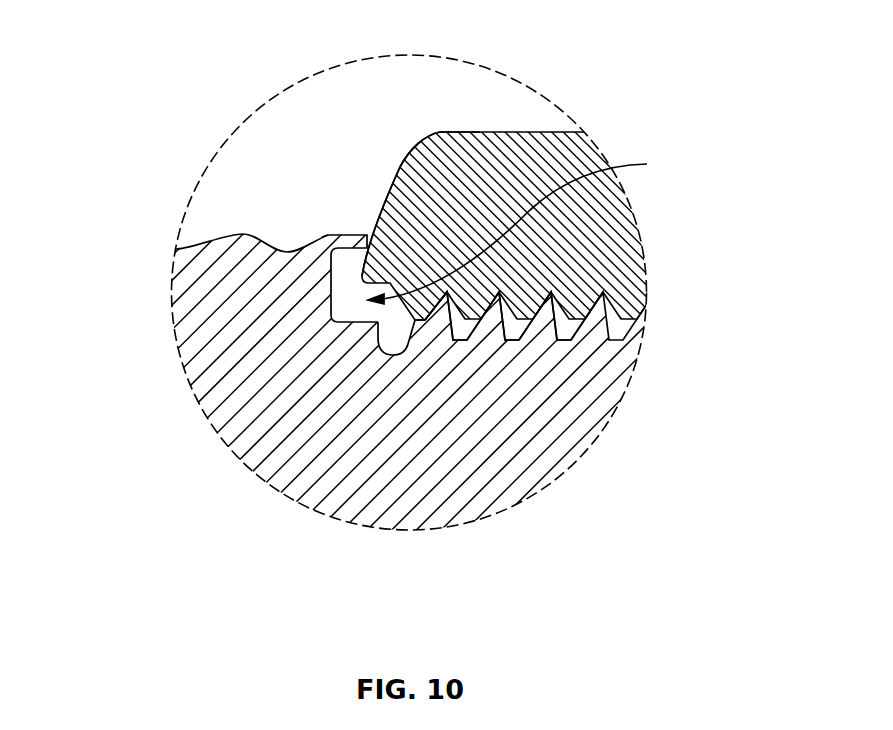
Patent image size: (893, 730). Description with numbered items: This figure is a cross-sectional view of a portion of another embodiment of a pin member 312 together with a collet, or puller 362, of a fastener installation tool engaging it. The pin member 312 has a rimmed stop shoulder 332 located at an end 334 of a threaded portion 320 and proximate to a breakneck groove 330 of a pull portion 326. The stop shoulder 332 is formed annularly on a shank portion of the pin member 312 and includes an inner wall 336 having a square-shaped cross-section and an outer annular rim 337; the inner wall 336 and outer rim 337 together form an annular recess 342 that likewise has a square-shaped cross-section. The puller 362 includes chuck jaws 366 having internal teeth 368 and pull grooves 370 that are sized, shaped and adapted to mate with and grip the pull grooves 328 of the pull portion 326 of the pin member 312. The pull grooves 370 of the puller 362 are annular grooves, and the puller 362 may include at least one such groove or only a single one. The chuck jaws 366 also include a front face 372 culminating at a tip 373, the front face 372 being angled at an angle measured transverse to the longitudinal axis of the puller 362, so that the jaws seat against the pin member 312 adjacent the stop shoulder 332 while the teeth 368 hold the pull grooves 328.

The pin member 312 is at (250, 425).
The threaded portion 320 is at (197, 268).
The pull portion 326 is at (543, 427).
The pull grooves 328 is at (618, 332).
The breakneck groove 330 is at (393, 358).
The stop shoulder 332 is at (343, 235).
The end 334 is at (325, 237).
The inner wall 336 is at (332, 281).
The outer annular rim 337 is at (367, 242).
The annular recess 342 is at (530, 228).
The puller 362 is at (566, 147).
The chuck jaws 366 is at (612, 254).
The internal teeth 368 is at (518, 312).
The pull grooves 370 is at (446, 330).
The front face 372 is at (410, 162).
The tip 373 is at (330, 328).